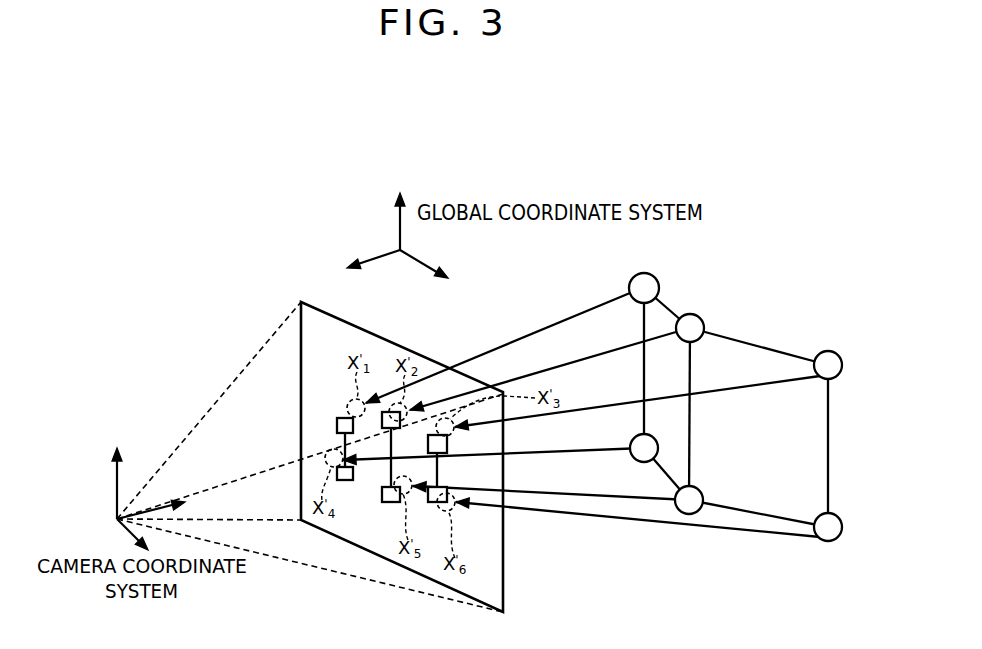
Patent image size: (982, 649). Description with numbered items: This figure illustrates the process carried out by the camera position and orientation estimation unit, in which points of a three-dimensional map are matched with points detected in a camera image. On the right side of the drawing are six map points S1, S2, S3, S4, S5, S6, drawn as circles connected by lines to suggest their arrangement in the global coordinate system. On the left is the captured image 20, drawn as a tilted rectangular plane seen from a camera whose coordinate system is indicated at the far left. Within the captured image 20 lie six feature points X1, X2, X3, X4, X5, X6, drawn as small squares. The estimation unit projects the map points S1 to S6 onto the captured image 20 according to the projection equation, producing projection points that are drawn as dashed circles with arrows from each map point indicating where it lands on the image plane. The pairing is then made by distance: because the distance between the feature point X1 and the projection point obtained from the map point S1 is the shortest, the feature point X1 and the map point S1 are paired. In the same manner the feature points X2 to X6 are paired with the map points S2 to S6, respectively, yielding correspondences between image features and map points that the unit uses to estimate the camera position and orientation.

The captured image 20 is at (349, 323).
The map point S1 is at (646, 273).
The map point S2 is at (691, 314).
The map point S3 is at (829, 351).
The map point S4 is at (635, 459).
The map point S5 is at (700, 492).
The map point S6 is at (828, 541).
The feature point X1 is at (343, 417).
The feature point X2 is at (390, 412).
The feature point X3 is at (448, 444).
The feature point X4 is at (345, 480).
The feature point X5 is at (388, 502).
The feature point X6 is at (435, 502).